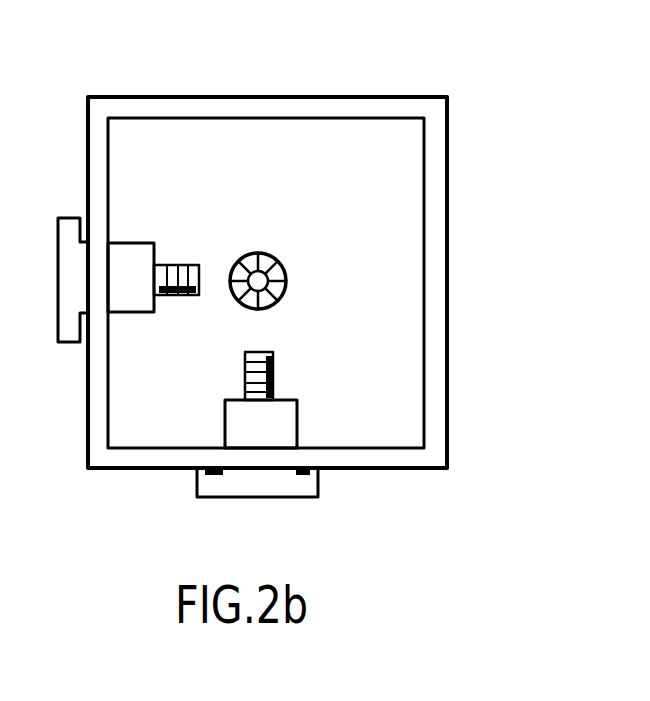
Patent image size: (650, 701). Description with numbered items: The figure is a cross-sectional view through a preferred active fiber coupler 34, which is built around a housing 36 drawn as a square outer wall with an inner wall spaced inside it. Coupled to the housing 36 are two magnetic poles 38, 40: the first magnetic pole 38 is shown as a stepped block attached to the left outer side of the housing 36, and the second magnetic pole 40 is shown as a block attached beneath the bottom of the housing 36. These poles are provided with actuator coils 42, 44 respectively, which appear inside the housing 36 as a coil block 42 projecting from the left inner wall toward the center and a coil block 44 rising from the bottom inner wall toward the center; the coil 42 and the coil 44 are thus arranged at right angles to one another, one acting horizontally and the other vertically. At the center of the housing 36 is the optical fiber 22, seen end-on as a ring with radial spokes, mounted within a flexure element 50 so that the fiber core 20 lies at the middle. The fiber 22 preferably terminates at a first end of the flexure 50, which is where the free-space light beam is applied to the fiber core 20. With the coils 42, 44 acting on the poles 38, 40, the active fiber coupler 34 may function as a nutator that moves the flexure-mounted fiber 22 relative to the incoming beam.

The active fiber coupler 34 is at (375, 70).
The housing 36 is at (448, 122).
The magnetic pole 38 is at (69, 284).
The magnetic pole 40 is at (290, 487).
The actuator coil 42 is at (180, 297).
The actuator coil 44 is at (273, 365).
The optical fiber 22 is at (288, 283).
The fiber core 20 is at (238, 298).
The flexure element 50 is at (273, 253).